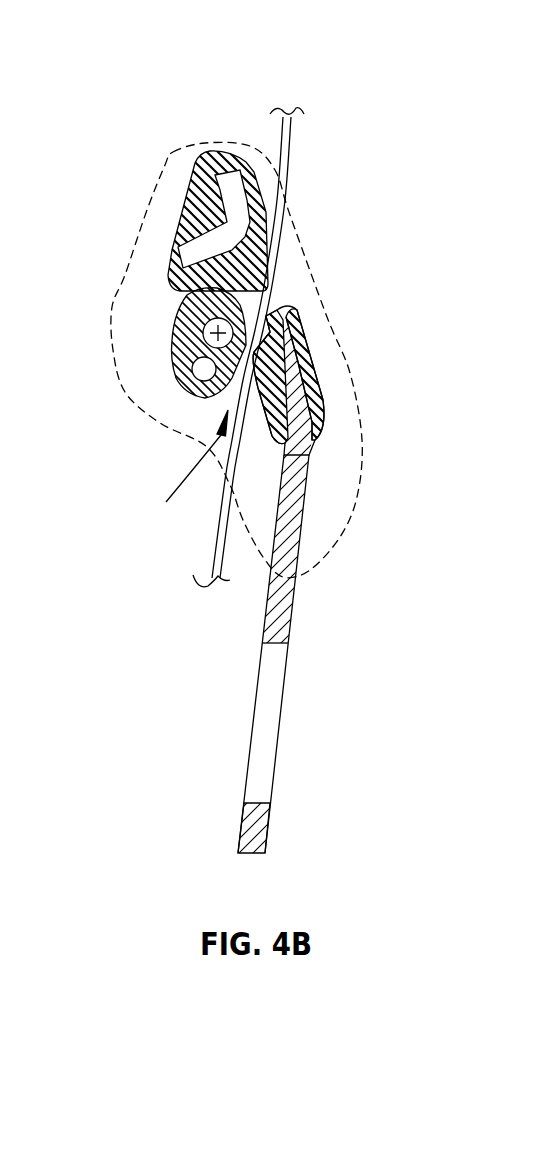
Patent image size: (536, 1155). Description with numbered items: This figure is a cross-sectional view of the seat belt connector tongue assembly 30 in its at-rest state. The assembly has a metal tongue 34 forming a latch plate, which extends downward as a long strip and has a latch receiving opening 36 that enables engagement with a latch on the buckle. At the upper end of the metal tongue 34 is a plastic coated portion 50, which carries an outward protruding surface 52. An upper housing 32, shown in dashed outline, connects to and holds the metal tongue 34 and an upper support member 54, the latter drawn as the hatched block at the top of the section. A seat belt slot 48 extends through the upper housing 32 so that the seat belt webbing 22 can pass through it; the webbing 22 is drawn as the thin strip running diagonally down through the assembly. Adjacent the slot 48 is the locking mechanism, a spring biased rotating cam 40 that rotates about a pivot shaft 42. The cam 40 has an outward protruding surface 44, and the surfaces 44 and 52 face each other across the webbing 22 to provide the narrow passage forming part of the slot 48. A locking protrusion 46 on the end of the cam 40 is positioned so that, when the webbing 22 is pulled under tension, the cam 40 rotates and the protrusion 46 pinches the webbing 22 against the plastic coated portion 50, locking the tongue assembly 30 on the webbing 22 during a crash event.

The seat belt connector tongue assembly 30 is at (159, 153).
The seat belt webbing 22 is at (281, 137).
The upper housing 32 is at (173, 153).
The metal tongue 34 is at (240, 827).
The latch receiving opening 36 is at (270, 740).
The cam 40 is at (149, 379).
The pivot shaft 42 is at (212, 333).
The outward protruding surface 44 is at (300, 316).
The locking protrusion 46 is at (256, 302).
The seat belt slot 48 is at (182, 467).
The plastic coated portion 50 is at (339, 380).
The outward protruding surface 52 is at (204, 369).
The upper support member 54 is at (210, 157).